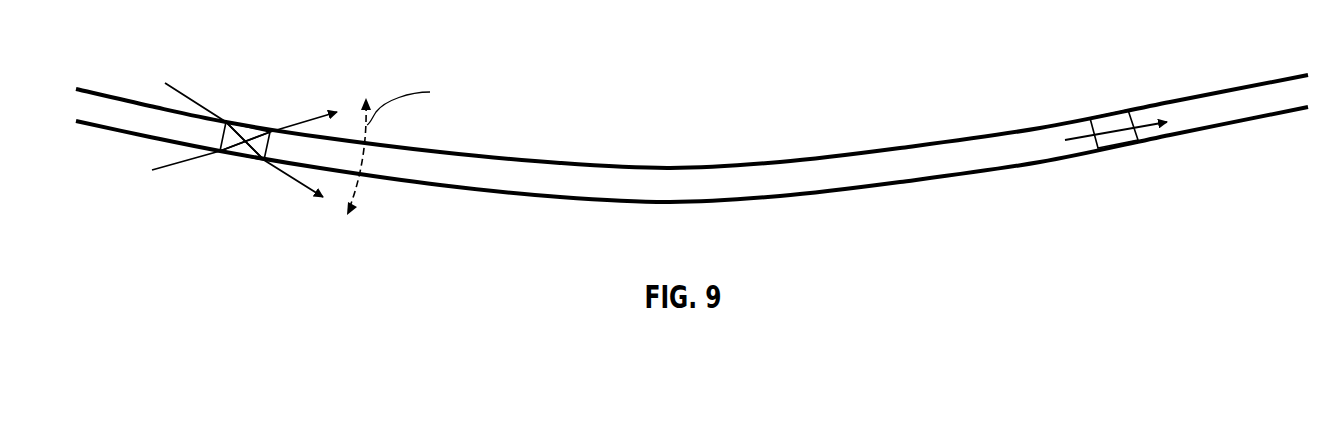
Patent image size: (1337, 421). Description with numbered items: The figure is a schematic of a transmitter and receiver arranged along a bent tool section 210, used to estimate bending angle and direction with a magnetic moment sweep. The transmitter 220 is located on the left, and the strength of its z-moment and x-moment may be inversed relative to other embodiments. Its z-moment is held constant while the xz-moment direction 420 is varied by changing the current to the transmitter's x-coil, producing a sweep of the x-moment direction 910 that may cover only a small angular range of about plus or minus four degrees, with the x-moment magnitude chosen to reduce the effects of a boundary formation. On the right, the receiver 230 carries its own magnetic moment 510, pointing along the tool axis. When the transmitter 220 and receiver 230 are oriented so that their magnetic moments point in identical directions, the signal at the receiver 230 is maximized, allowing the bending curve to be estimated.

The pipe / conduit 210 is at (865, 163).
The transmitter 220 is at (233, 155).
The xz-moment direction 420 is at (308, 192).
The x-moment direction sweep 910 is at (353, 197).
The receiver 230 is at (1102, 150).
The magnetic moment 510 is at (1150, 140).